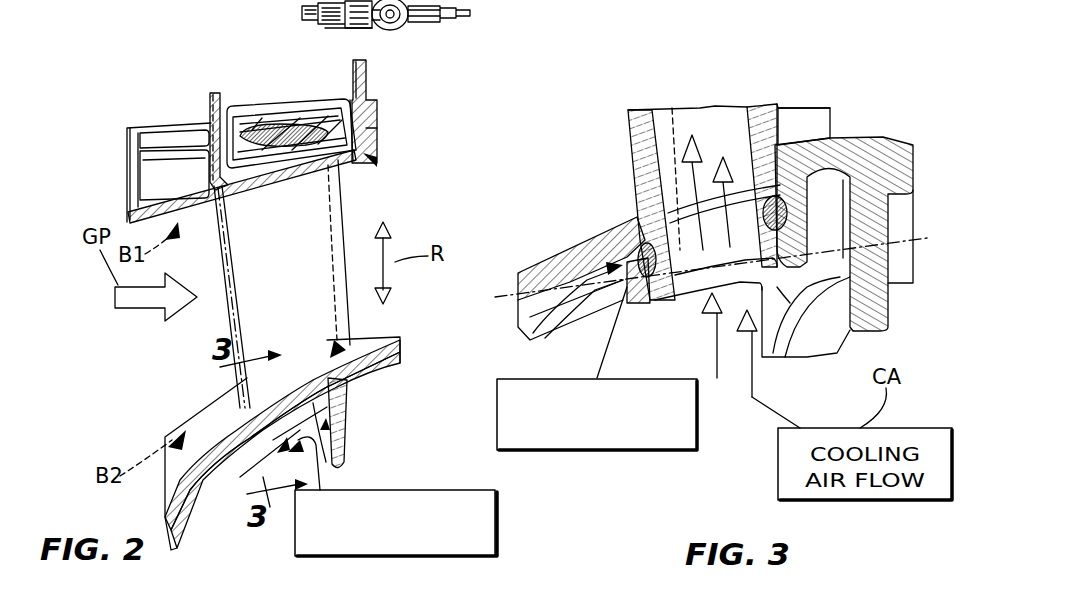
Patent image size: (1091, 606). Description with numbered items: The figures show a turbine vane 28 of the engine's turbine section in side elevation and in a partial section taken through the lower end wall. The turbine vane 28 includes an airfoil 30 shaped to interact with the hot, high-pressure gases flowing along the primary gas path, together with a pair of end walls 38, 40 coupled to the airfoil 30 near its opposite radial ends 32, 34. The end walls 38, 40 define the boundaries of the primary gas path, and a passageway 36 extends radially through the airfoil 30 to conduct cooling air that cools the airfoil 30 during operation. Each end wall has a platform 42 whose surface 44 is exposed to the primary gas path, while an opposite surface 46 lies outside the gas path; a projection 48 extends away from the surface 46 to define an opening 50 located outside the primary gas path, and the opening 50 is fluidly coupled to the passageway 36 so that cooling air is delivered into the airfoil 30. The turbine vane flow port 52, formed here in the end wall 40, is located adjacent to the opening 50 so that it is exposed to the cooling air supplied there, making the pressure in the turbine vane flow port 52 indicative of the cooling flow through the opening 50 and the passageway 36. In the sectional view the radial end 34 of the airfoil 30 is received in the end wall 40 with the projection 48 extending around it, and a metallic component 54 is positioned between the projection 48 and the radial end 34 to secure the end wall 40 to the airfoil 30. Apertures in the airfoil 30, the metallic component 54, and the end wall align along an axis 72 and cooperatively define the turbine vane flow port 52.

In FIG. 2, the turbine vane 28 is at (388, 100).
In FIG. 3, the turbine vane 28 is at (840, 82).
In FIG. 2, the airfoil 30 is at (350, 205).
In FIG. 3, the airfoil 30 is at (712, 133).
In FIG. 2, the radial end 32 is at (297, 150).
In FIG. 2, the radial end 34 is at (365, 380).
In FIG. 3, the radial end 34 is at (705, 250).
In FIG. 2, the passageway 36 is at (325, 200).
In FIG. 3, the passageway 36 is at (685, 130).
In FIG. 2, the end wall 38 is at (168, 118).
In FIG. 2, the end wall 40 is at (150, 430).
In FIG. 3, the end wall 40 is at (850, 157).
In FIG. 2, the platform 42 is at (366, 154).
In FIG. 3, the platform 42 is at (555, 250).
In FIG. 2, the surface 44 is at (213, 205).
In FIG. 3, the surface 44 is at (583, 237).
In FIG. 2, the surface 46 is at (273, 122).
In FIG. 3, the surface 46 is at (530, 300).
In FIG. 2, the projection 48 is at (244, 130).
In FIG. 3, the projection 48 is at (617, 260).
In FIG. 2, the opening 50 is at (347, 466).
In FIG. 3, the opening 50 is at (693, 298).
In FIG. 2, the turbine vane flow port 52 is at (497, 522).
In FIG. 3, the turbine vane flow port 52 is at (637, 452).
In FIG. 3, the metallic component 54 is at (792, 140).
In FIG. 3, the axis 72 is at (498, 297).